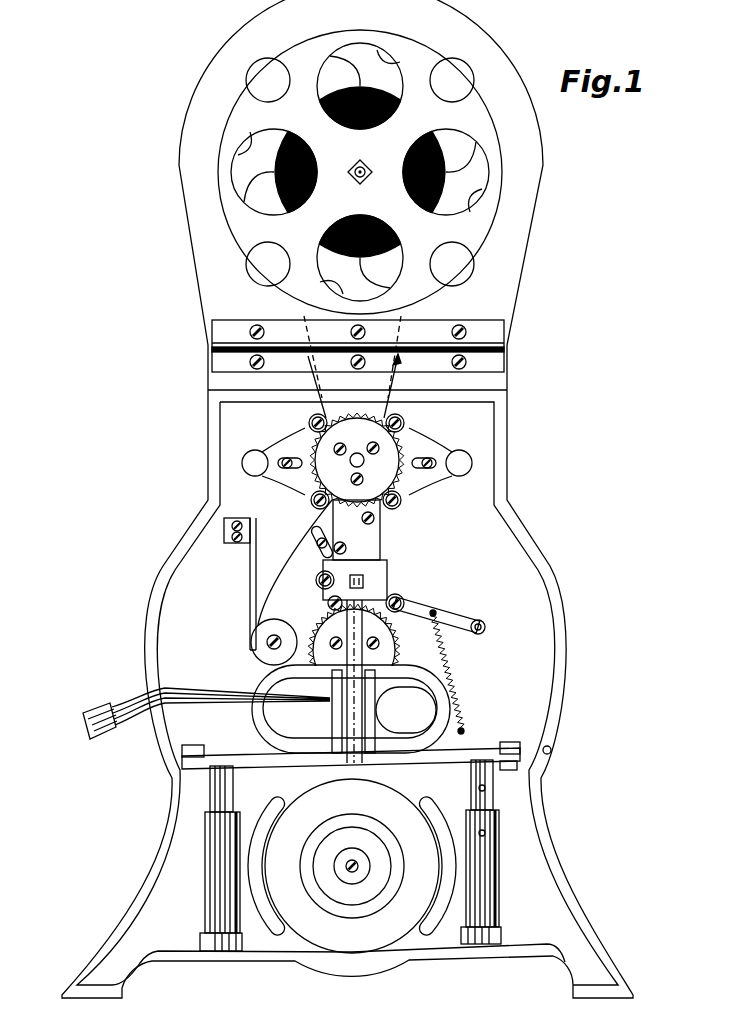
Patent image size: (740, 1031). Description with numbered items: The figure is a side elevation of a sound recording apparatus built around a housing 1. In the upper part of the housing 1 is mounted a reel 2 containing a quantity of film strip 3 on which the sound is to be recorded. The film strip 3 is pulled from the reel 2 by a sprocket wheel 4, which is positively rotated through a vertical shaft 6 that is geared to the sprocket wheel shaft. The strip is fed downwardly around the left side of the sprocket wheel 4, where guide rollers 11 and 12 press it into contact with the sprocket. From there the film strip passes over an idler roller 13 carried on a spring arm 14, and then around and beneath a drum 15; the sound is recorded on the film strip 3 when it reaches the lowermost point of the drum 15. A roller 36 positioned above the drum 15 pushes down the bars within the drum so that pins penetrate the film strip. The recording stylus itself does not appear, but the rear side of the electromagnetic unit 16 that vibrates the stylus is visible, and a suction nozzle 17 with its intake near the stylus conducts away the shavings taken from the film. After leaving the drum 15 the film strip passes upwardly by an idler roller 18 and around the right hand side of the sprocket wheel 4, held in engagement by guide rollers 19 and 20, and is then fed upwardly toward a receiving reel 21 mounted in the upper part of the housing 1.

The housing 1 is at (179, 538).
The reel 2 is at (354, 172).
The film strip 3 is at (275, 158).
The receiving reel 21 is at (372, 292).
The sprocket wheel 4 is at (303, 433).
The guide roller 11 is at (311, 418).
The guide roller 20 is at (404, 424).
The guide roller 12 is at (311, 500).
The guide roller 19 is at (400, 502).
The spring arm 14 is at (250, 563).
The idler roller 13 is at (262, 650).
The roller 36 is at (327, 603).
The drum 15 is at (318, 623).
The vertical shaft 6 is at (355, 597).
The idler roller 18 is at (401, 598).
The electromagnetic unit 16 is at (253, 730).
The suction nozzle 17 is at (127, 702).